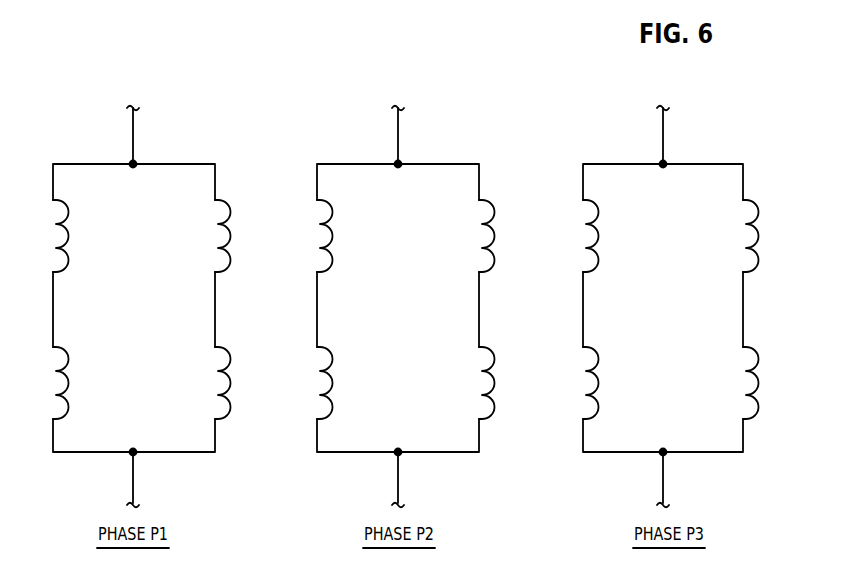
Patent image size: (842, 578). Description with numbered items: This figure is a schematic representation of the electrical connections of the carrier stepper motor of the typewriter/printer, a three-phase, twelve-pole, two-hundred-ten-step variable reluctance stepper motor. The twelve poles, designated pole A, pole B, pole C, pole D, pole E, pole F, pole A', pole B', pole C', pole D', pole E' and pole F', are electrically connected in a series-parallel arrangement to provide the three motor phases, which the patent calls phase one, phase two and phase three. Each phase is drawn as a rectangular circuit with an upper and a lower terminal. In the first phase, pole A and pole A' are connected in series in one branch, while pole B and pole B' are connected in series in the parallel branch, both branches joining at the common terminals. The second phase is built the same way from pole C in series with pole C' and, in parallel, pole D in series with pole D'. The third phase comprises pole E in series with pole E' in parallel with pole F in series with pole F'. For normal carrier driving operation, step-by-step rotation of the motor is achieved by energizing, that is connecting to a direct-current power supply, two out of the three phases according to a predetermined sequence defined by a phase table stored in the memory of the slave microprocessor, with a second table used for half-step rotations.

The pole A is at (72, 234).
The pole B is at (232, 234).
The pole A' is at (74, 379).
The pole B' is at (235, 379).
The pole C is at (336, 234).
The pole D is at (497, 234).
The pole C' is at (339, 379).
The pole D' is at (500, 379).
The pole E is at (601, 234).
The pole F is at (759, 234).
The pole E' is at (604, 379).
The pole F' is at (762, 379).